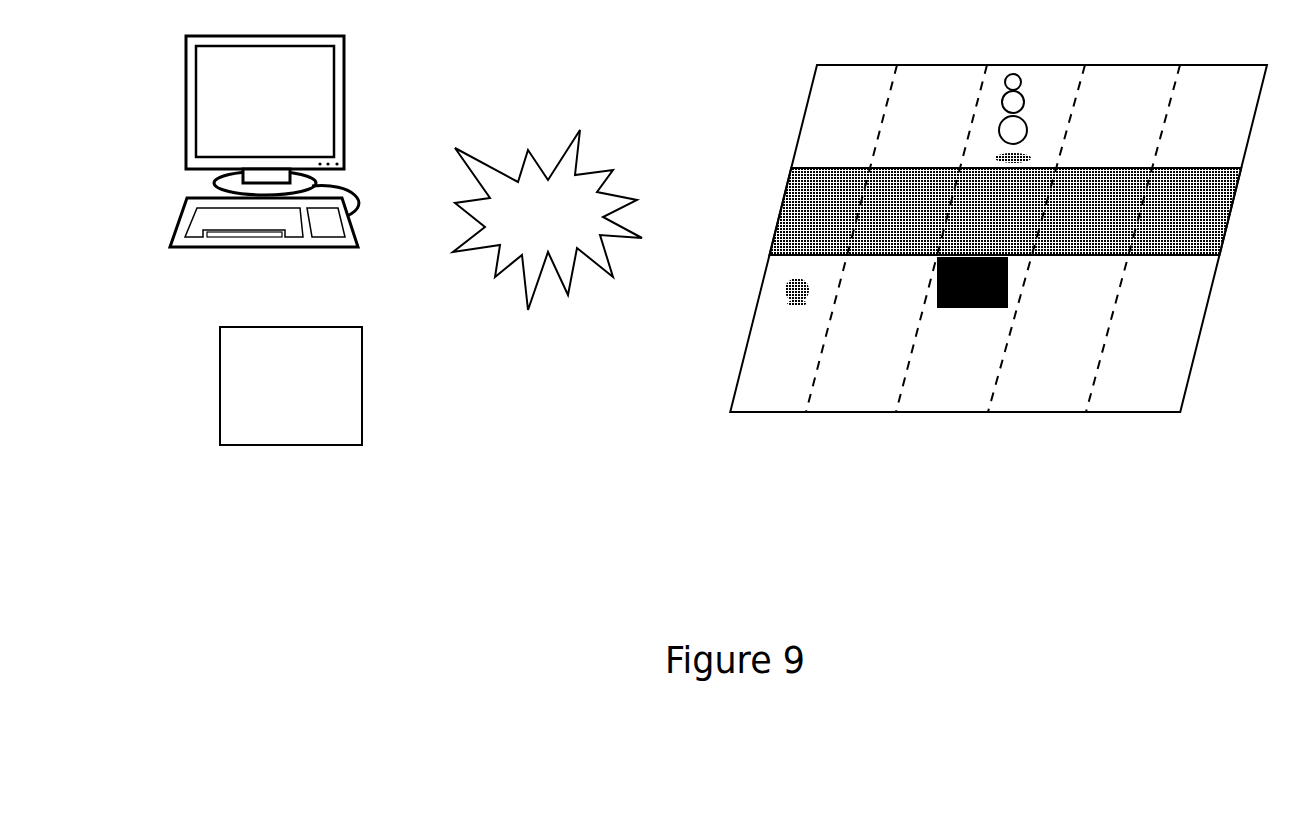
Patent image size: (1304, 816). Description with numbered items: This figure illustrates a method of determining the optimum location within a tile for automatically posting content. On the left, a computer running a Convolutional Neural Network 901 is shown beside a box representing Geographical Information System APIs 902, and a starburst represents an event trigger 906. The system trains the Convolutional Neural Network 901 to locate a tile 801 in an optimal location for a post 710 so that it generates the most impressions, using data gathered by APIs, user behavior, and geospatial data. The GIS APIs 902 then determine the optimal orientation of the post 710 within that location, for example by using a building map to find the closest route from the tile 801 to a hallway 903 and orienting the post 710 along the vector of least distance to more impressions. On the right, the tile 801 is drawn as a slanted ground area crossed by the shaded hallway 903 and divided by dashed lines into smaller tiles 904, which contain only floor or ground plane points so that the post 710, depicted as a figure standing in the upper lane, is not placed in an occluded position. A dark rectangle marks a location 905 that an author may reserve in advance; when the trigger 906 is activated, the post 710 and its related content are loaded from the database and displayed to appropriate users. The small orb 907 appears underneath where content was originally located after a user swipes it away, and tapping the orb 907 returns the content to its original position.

The Convolutional Neural Network 901 is at (289, 154).
The Geographical Information System APIs 902 is at (291, 404).
The trigger 906 is at (547, 226).
The tile 801 is at (998, 258).
The smaller tile 904 is at (1024, 238).
The hallway 903 is at (1006, 211).
The post 710 is at (1034, 118).
The location 905 is at (972, 300).
The orb 907 is at (800, 310).